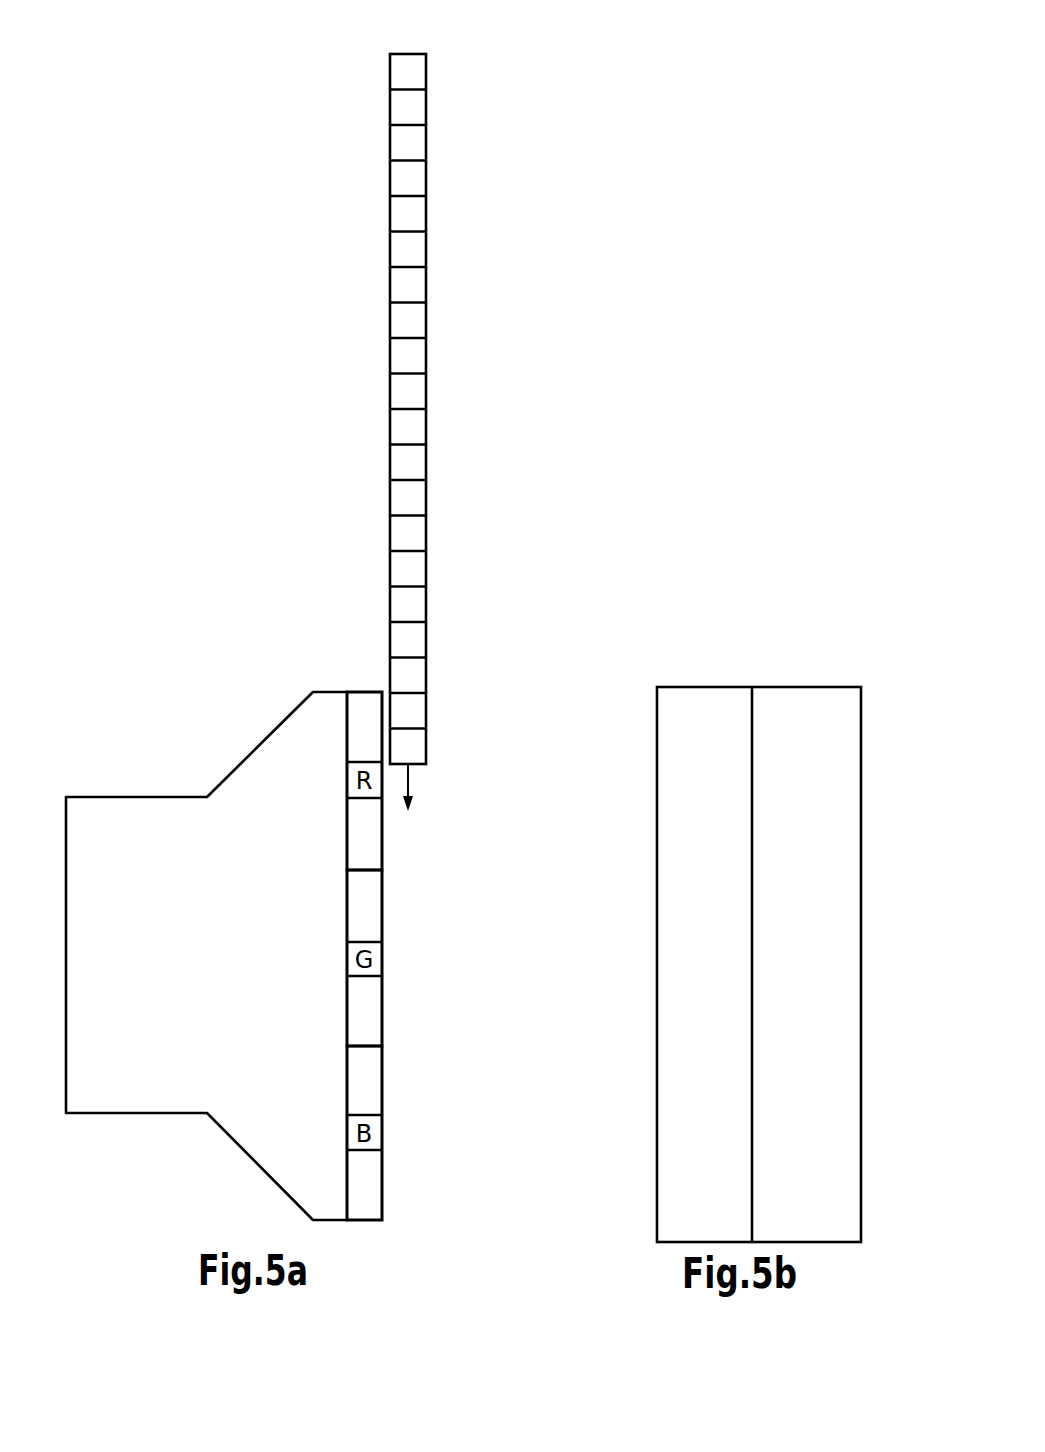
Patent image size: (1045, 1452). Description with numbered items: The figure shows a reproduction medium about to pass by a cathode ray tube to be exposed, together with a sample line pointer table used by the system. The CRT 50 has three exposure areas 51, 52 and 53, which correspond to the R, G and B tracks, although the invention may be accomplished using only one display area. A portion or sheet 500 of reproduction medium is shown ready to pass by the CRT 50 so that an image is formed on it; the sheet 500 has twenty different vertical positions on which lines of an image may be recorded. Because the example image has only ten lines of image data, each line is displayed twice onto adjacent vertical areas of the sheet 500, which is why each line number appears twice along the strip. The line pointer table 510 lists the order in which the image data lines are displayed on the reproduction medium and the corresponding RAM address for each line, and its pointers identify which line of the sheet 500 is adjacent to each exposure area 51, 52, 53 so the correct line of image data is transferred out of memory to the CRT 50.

In FIG. 5A, the CRT 50 is at (166, 797).
In FIG. 5A, the exposure area 51 is at (336, 692).
In FIG. 5A, the exposure area 52 is at (336, 870).
In FIG. 5A, the exposure area 53 is at (336, 1046).
In FIG. 5A, the sheet of reproduction medium 500 is at (427, 330).
In FIG. 5B, the line pointer table 510 is at (762, 912).